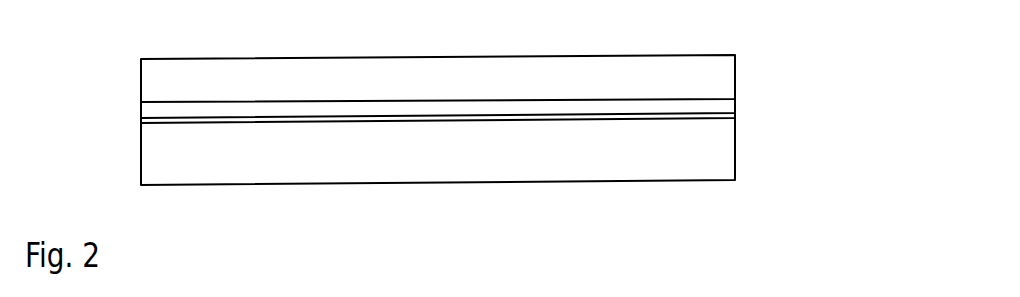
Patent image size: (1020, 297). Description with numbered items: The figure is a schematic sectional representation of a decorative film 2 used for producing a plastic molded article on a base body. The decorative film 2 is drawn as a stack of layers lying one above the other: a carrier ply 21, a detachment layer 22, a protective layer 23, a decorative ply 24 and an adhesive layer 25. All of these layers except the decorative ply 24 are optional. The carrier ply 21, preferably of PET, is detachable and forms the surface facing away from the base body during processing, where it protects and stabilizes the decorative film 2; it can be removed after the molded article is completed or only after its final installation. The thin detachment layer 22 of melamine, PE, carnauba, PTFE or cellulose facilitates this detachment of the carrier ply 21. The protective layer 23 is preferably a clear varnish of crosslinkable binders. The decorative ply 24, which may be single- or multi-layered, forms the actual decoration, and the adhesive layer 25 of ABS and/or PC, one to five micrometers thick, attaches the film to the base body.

The decorative film 2 is at (492, 111).
The carrier ply 21 is at (460, 151).
The detachment layer 22 is at (735, 115).
The protective layer 23 is at (735, 100).
The decorative ply 24 is at (731, 88).
The adhesive layer 25 is at (730, 65).